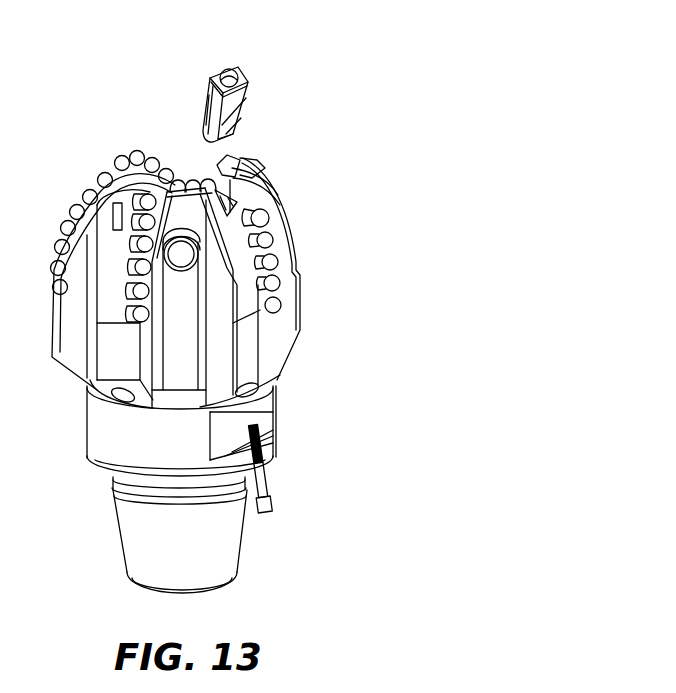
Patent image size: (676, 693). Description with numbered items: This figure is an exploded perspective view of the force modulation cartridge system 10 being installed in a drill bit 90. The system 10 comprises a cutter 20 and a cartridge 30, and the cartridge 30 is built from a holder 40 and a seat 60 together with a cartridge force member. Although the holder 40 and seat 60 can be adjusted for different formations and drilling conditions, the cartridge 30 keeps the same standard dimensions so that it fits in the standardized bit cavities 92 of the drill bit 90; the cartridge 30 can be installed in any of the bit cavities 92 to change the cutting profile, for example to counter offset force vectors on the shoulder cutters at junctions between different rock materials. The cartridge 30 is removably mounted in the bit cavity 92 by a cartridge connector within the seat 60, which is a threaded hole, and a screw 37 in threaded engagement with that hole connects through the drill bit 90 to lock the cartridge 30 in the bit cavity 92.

The force modulation cartridge system 10 is at (213, 97).
The cutter 20 is at (236, 72).
The cartridge 30 is at (206, 111).
The holder 40 is at (233, 100).
The seat 60 is at (233, 130).
The drill bit 90 is at (285, 303).
The bit cavity 92 is at (268, 196).
The screw 37 is at (262, 482).